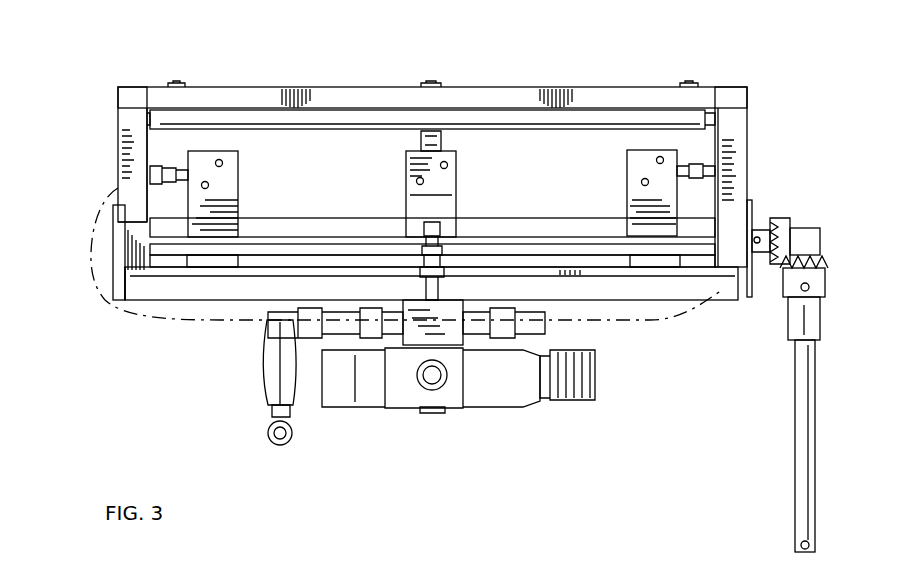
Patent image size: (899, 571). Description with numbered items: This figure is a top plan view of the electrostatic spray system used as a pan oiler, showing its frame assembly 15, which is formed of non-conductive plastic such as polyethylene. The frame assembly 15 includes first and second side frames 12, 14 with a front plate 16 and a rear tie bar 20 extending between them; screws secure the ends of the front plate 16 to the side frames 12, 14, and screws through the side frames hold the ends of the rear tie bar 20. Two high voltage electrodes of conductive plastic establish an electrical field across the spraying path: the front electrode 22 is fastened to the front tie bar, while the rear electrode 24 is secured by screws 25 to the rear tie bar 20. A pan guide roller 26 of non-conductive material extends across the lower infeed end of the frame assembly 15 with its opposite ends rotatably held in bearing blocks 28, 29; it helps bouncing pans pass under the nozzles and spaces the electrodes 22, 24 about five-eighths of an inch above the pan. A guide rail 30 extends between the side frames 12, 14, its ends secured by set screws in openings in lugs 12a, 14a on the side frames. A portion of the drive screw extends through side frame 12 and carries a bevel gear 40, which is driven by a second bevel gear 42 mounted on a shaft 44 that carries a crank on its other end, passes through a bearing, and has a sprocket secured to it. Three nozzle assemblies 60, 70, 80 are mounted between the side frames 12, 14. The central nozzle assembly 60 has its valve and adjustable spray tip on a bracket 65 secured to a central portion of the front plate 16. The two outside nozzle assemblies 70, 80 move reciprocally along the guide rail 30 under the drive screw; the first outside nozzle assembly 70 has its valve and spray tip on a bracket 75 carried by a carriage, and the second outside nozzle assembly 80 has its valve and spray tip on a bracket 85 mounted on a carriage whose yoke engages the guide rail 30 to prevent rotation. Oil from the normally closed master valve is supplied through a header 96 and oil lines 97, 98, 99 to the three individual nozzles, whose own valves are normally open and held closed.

The first side frame 12 is at (730, 105).
The lug 12a is at (758, 214).
The second side frame 14 is at (132, 125).
The lug 14a is at (120, 257).
The frame assembly 15 is at (138, 84).
The front plate 16 is at (210, 290).
The rear tie bar 20 is at (310, 89).
The front electrode 22 is at (523, 222).
The rear electrode 24 is at (557, 118).
The screws 25 is at (178, 85).
The pan guide roller 26 is at (645, 312).
The bearing block 28 is at (100, 280).
The bearing block 29 is at (797, 300).
The guide rail 30 is at (283, 243).
The bevel gear 40 is at (820, 235).
The second bevel gear 42 is at (818, 268).
The shaft 44 is at (800, 495).
The central nozzle assembly 60 is at (404, 182).
The bracket 65 is at (440, 185).
The first outside nozzle assembly 70 is at (625, 178).
The bracket 75 is at (632, 200).
The second outside nozzle assembly 80 is at (241, 162).
The bracket 85 is at (238, 196).
The header 96 is at (425, 322).
The oil line 97 is at (735, 158).
The oil line 98 is at (424, 232).
The oil line 99 is at (128, 148).